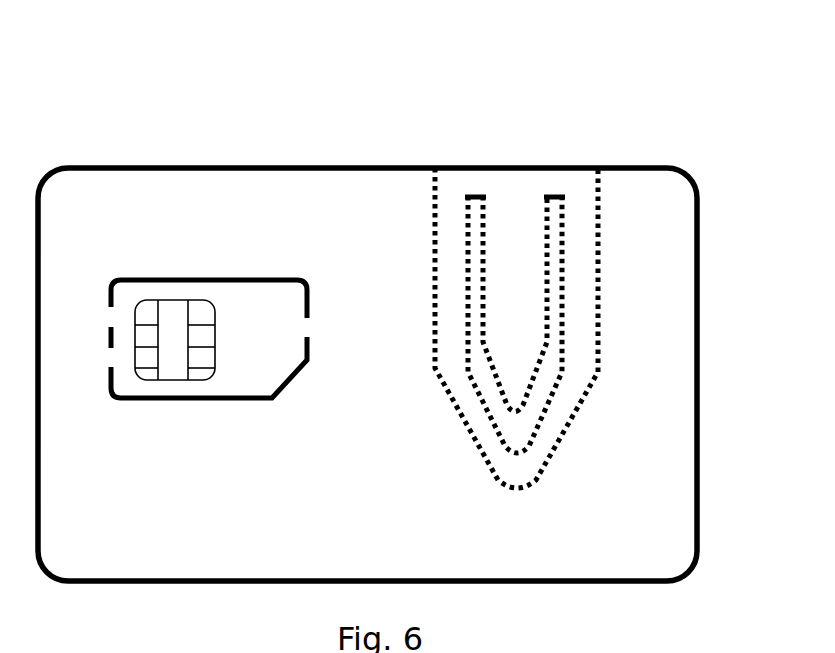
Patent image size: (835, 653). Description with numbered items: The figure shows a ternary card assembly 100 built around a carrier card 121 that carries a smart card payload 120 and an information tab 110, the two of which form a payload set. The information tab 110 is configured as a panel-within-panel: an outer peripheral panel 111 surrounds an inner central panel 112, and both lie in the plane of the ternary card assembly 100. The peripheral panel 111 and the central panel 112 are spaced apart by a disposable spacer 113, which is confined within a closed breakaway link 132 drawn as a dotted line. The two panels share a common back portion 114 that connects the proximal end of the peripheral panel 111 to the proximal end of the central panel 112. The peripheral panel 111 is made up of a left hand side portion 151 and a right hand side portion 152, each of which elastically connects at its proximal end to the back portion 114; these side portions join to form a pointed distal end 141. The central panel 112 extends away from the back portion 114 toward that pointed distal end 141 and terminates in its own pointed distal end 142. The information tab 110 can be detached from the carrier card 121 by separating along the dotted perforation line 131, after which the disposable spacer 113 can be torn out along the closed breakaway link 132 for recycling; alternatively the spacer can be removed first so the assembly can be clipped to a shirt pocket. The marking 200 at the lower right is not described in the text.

The ternary card assembly 100 is at (682, 118).
The information tab 110 is at (648, 250).
The peripheral panel 111 is at (577, 383).
The central panel 112 is at (515, 362).
The disposable spacer 113 is at (515, 432).
The back portion 114 is at (500, 183).
The payload 120 is at (222, 225).
The carrier card 121 is at (173, 232).
The perforation line 131 is at (435, 198).
The closed breakaway link 132 is at (470, 354).
The distal end of peripheral panel 141 is at (515, 480).
The distal end of central panel 142 is at (510, 403).
The left hand side portion 151 is at (450, 290).
The right hand side portion 152 is at (580, 342).
The sheet annotation 200 is at (784, 644).